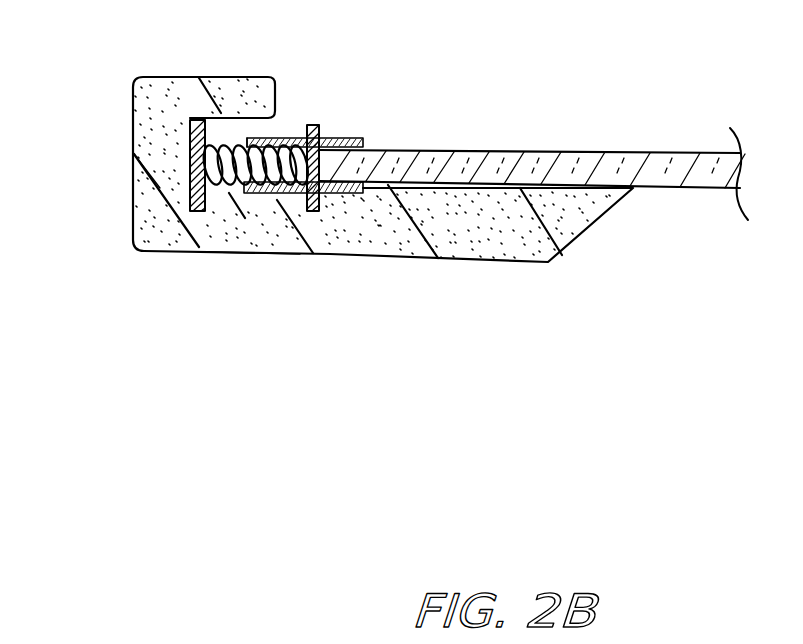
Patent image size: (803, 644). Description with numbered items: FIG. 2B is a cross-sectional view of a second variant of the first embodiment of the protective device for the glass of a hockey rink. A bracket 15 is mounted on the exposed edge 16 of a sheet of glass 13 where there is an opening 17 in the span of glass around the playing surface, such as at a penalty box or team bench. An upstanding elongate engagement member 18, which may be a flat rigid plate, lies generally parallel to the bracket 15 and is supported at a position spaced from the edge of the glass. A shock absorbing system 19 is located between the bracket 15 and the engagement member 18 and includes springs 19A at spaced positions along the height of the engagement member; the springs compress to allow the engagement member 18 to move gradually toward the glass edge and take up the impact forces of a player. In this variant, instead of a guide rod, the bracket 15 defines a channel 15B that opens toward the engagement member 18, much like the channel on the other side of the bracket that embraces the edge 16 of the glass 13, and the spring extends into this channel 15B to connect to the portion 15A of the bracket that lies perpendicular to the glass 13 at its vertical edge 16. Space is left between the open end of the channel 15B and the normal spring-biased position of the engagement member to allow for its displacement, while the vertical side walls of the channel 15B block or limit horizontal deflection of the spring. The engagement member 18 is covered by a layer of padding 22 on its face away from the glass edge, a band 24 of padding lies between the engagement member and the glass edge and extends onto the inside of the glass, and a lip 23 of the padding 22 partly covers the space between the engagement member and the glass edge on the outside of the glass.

The glass 13 is at (626, 180).
The bracket 15 is at (341, 110).
The portion of the bracket 15A is at (310, 353).
The channel 15B is at (286, 140).
The exposed edge 16 is at (326, 162).
The opening 17 is at (32, 273).
The engagement member 18 is at (211, 120).
The shock absorbing system 19 is at (260, 340).
The springs 19A is at (247, 141).
The layer of padding 22 is at (145, 220).
The lip 23 is at (210, 77).
The band of padding 24 is at (232, 246).